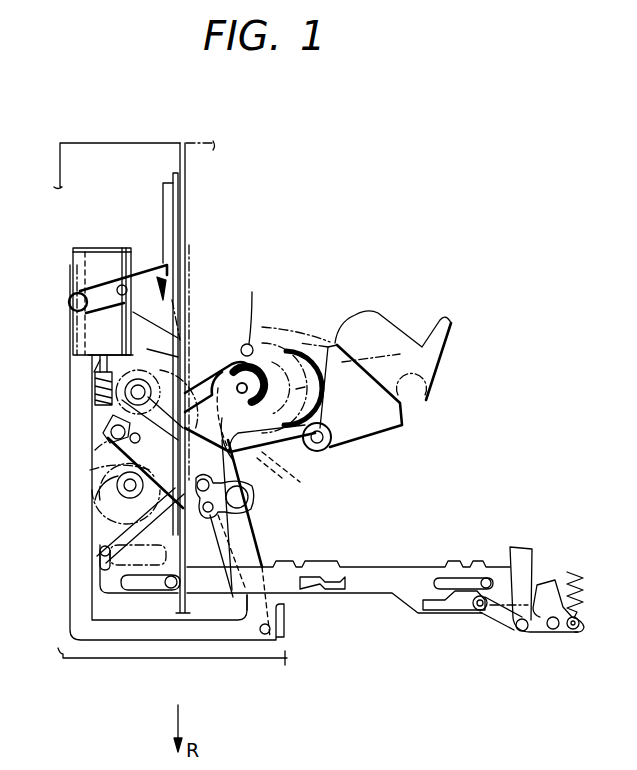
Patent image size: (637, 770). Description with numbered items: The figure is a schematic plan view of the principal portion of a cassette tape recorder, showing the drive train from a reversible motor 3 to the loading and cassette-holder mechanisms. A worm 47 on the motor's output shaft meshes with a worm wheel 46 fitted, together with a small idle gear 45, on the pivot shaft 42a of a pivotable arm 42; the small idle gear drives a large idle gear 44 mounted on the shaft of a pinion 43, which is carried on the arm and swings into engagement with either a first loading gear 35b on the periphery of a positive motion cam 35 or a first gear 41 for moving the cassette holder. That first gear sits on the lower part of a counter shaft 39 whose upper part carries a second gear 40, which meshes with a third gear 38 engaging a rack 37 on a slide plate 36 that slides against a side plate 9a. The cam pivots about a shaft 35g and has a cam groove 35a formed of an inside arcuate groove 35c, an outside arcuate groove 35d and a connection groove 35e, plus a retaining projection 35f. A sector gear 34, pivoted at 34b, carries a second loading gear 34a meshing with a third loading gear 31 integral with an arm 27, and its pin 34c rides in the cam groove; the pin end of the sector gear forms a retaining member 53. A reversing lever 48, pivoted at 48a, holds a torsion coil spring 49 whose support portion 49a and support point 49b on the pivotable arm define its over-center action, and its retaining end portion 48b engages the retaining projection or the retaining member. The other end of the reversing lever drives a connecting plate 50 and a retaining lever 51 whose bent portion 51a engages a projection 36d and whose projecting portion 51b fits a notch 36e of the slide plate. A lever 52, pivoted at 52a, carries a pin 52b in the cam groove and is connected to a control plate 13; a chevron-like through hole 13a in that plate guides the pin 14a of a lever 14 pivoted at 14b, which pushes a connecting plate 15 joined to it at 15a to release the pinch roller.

The reversible motor 3 is at (90, 268).
The side plate 9a is at (188, 190).
The control plate 13 is at (375, 598).
The chevron-like through hole 13a is at (438, 605).
The lever 14 is at (552, 632).
The pin 14a is at (482, 612).
The pivot 14b is at (577, 628).
The connecting plate 15 is at (525, 565).
The pivot 15a is at (522, 633).
The arm 27 is at (397, 338).
The third loading gear 31 is at (430, 412).
The sector gear 34 is at (398, 430).
The second loading gear 34a is at (428, 388).
The pivot 34b is at (332, 447).
The pin 34c is at (285, 470).
The positive motion cam 35 is at (264, 340).
The cam groove 35a is at (342, 362).
The first loading gear 35b is at (270, 320).
The inside arcuate groove 35c is at (306, 387).
The outside arcuate groove 35d is at (336, 348).
The connection groove 35e is at (240, 455).
The retaining projection 35f is at (258, 308).
The shaft 35g is at (322, 422).
The slide plate 36 is at (172, 195).
The projection 36d is at (170, 285).
The notch 36e is at (183, 310).
The rack 37 is at (162, 235).
The third gear for moving the cassette holder 38 is at (103, 440).
The counter shaft 39 is at (128, 490).
The second gear for moving the cassette holder 40 is at (118, 488).
The first gear for moving the cassette holder 41 is at (100, 545).
The pivotable arm 42 is at (246, 508).
The pivot shaft 42a is at (130, 392).
The pinion 43 is at (226, 515).
The large idle gear 44 is at (95, 468).
The small idle gear 45 is at (98, 368).
The worm wheel 46 is at (94, 388).
The worm 47 is at (94, 372).
The reversing lever 48 is at (157, 651).
The pivot shaft 48a is at (266, 636).
The retaining end portion 48b is at (270, 462).
The torsion coil spring 49 is at (250, 510).
The support portion 49a is at (268, 545).
The support point 49b is at (240, 585).
The connecting plate 50 is at (70, 602).
The retaining lever 51 is at (72, 300).
The bent portion 51a is at (190, 250).
The projecting portion 51b is at (237, 383).
The lever 52 is at (104, 548).
The pivot 52a is at (105, 428).
The pin 52b is at (268, 338).
The retaining member 53 is at (242, 346).